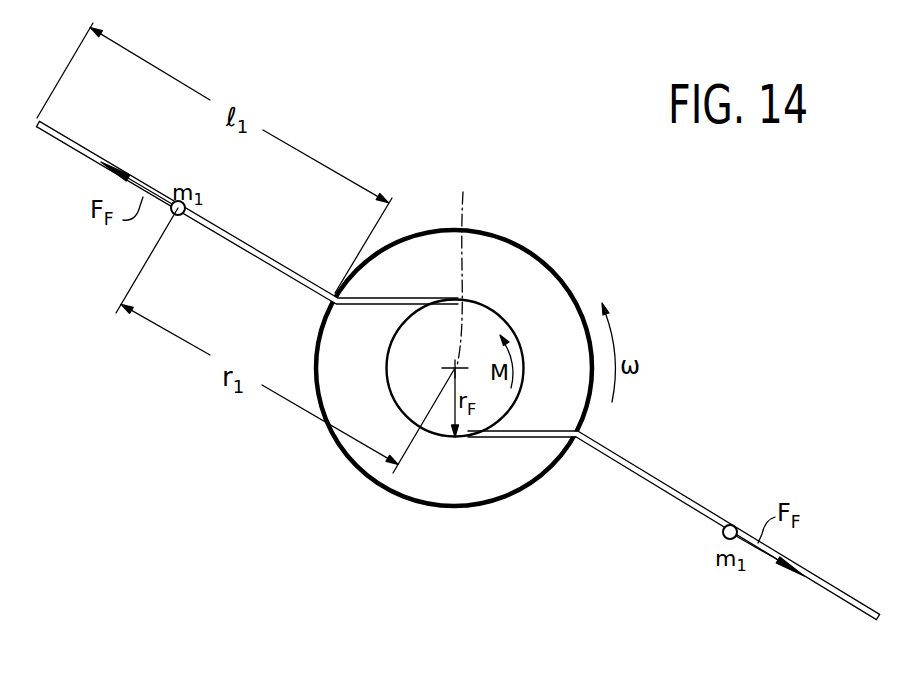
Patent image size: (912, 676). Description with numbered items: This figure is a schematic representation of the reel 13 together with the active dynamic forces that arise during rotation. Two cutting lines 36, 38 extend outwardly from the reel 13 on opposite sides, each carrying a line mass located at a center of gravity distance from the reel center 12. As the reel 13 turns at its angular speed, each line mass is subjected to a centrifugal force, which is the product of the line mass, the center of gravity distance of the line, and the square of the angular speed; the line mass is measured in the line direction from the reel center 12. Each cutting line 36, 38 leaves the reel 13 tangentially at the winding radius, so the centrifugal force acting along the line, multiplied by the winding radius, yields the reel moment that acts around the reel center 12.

The reel 13 is at (562, 263).
The reel center 12 is at (488, 272).
The cutting line 36 is at (238, 238).
The cutting line 38 is at (655, 488).